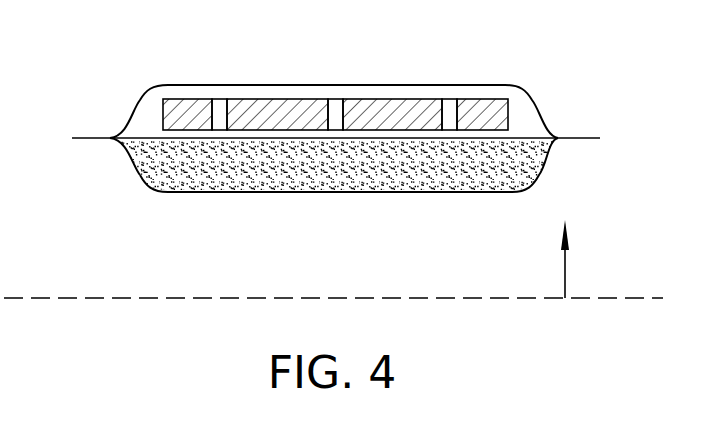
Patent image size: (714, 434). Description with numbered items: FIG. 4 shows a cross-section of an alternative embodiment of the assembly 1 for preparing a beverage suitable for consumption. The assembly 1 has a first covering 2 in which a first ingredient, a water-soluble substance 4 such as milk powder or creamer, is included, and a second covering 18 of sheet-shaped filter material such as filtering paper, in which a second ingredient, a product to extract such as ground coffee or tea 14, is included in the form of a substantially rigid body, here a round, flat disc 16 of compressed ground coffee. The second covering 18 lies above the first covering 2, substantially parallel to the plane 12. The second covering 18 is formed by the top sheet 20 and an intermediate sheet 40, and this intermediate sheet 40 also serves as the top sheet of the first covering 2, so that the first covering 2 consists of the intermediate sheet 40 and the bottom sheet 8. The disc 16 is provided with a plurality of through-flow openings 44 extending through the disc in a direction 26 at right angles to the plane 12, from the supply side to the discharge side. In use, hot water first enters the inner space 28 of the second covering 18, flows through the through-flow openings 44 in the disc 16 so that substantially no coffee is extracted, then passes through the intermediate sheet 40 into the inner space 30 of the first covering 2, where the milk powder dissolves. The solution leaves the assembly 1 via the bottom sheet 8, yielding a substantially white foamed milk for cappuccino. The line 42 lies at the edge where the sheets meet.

The assembly 1 is at (680, 263).
The first covering 2 is at (480, 193).
The water-soluble substance 4 is at (403, 157).
The bottom sheet 8 is at (128, 163).
The plane 12 is at (463, 298).
The substance to be extracted 14 is at (193, 107).
The disc 16 is at (410, 100).
The second covering 18 is at (360, 85).
The top sheet 20 is at (542, 110).
The direction 26 is at (567, 270).
The inner space of the second covering 28 is at (263, 95).
The inner space of the first covering 30 is at (280, 158).
The intermediate sheet 40 is at (200, 140).
The intermediate layer edge 42 is at (583, 137).
The through-flow openings 44 is at (221, 105).